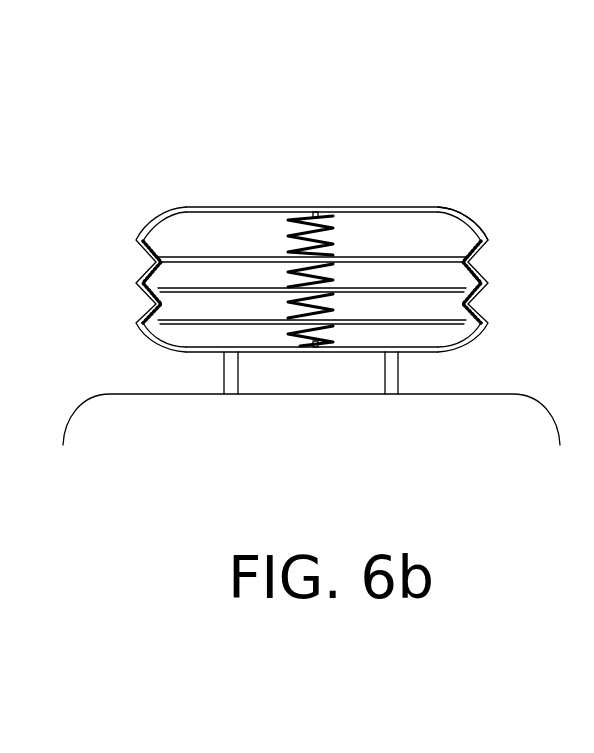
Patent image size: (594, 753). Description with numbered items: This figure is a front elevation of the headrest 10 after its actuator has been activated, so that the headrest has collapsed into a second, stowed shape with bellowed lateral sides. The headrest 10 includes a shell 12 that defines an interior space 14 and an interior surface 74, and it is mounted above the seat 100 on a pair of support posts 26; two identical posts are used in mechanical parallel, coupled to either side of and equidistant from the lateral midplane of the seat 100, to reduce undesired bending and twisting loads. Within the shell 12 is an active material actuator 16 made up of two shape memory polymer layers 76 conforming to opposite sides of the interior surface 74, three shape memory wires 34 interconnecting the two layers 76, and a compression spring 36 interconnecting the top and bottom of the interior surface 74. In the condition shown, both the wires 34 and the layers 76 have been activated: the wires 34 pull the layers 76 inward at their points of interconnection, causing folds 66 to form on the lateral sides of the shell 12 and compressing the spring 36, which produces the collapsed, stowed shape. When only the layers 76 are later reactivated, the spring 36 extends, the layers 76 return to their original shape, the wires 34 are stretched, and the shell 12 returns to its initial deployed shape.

The headrest 10 is at (228, 168).
The shell 12 is at (160, 215).
The interior space 14 is at (397, 246).
The active material actuator 16 is at (203, 269).
The support posts 26 is at (400, 372).
The shape memory wires 34 is at (227, 297).
The compression spring 36 is at (335, 342).
The folds 66 is at (483, 256).
The interior surface 74 is at (472, 216).
The shape memory polymer layer 76 is at (143, 254).
The seat 100 is at (140, 393).